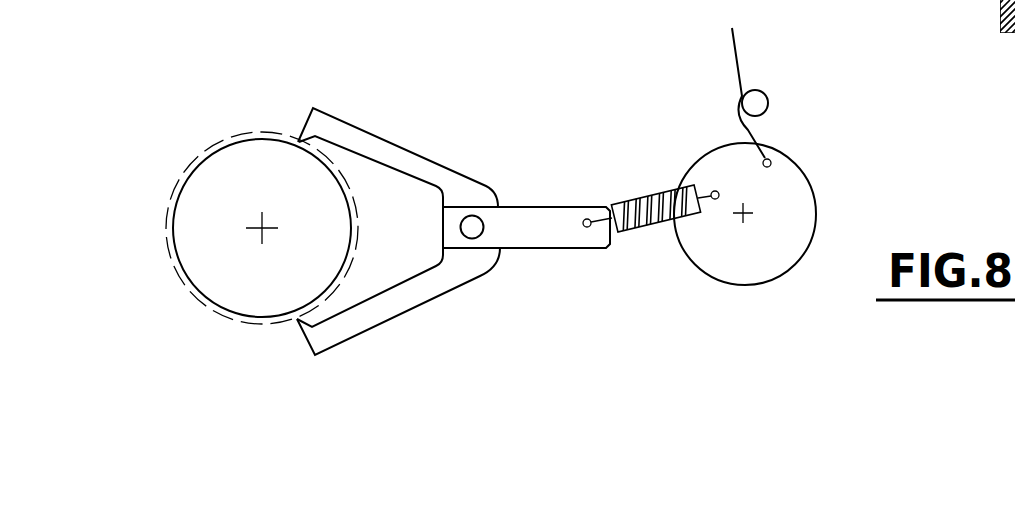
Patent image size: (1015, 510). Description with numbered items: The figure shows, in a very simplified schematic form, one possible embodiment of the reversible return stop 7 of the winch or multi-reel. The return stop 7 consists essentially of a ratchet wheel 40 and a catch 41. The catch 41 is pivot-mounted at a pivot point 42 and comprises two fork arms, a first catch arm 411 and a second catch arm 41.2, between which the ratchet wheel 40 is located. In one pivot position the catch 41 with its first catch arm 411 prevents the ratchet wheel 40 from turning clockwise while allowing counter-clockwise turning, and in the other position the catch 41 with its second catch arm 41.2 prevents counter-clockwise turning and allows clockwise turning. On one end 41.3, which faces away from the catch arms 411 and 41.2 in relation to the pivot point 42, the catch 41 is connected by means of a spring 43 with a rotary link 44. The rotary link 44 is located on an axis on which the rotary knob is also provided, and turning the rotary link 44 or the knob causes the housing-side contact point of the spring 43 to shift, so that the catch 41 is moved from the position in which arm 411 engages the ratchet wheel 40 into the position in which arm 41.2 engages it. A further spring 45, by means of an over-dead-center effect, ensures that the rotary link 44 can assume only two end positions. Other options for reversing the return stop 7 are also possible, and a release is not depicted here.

The reversible return stop 7 is at (492, 130).
The ratchet wheel 40 is at (233, 163).
The catch 41 is at (486, 187).
The catch arm 411 is at (348, 128).
The catch arm 41.2 is at (423, 293).
The end of the catch 41.3 is at (570, 238).
The pivot point 42 is at (478, 217).
The spring 43 is at (652, 192).
The rotary link 44 is at (788, 190).
The further spring 45 is at (768, 103).